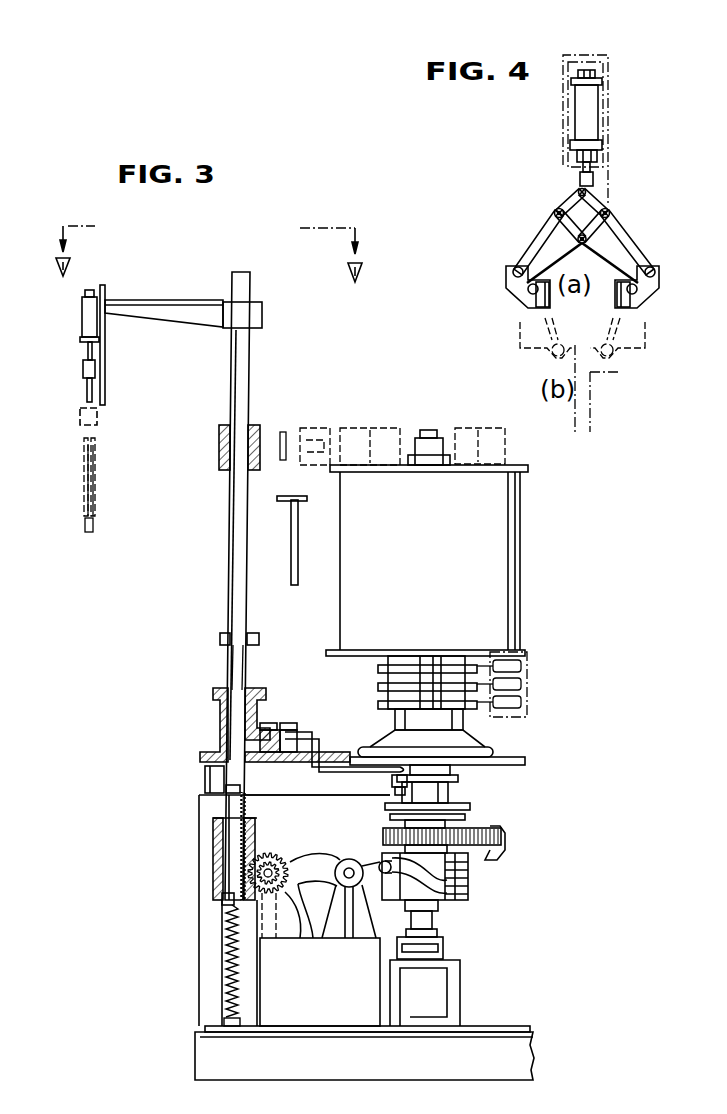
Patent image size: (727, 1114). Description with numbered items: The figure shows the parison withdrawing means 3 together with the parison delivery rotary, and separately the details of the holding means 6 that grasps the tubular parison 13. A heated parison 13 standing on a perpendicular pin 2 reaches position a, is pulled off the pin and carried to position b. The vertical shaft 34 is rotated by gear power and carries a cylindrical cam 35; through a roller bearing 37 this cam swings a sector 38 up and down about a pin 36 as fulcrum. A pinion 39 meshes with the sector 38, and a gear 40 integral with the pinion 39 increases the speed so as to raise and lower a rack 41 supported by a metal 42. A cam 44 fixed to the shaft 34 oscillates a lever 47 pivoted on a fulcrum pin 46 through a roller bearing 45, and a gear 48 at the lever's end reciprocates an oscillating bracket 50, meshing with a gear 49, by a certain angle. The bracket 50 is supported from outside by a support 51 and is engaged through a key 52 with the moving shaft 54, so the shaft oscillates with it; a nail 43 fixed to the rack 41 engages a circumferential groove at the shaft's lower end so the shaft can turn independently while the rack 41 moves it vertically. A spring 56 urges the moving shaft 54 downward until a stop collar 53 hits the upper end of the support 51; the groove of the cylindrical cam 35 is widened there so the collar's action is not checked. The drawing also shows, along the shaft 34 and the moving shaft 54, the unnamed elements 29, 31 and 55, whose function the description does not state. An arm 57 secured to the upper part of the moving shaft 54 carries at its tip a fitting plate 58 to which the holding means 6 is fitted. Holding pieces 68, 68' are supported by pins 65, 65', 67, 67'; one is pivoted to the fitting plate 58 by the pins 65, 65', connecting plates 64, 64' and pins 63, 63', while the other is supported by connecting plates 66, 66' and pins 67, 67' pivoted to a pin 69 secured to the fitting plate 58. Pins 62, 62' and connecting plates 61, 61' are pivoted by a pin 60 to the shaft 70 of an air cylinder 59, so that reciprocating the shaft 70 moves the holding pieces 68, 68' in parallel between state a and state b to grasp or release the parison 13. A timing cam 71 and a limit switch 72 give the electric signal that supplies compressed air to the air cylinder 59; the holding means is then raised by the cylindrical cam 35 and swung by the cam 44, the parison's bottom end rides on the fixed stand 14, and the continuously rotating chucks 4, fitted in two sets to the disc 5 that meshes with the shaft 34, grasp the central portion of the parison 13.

In FIG. 3, the perpendicular pin 2 is at (100, 478).
In FIG. 3, the parison withdrawing means 3 is at (181, 288).
In FIG. 3, the chucks 4 is at (362, 425).
In FIG. 3, the disc 5 is at (509, 465).
In FIG. 3, the holding means 6 is at (90, 292).
In FIG. 3, the tubular parison 13 is at (97, 505).
In FIG. 4, the tubular parison 13 is at (592, 402).
In FIG. 3, the fixed stand 14 is at (300, 510).
In FIG. 3, the worm wheel 29 is at (507, 840).
In FIG. 3, the disc 31 is at (472, 808).
In FIG. 3, the shaft 34 is at (443, 925).
In FIG. 3, the cylindrical cam 35 is at (470, 900).
In FIG. 3, the pin 36 is at (358, 905).
In FIG. 3, the roller bearing 37 is at (386, 896).
In FIG. 3, the sector 38 is at (318, 920).
In FIG. 3, the pinion 39 is at (256, 850).
In FIG. 3, the gear 40 is at (280, 860).
In FIG. 3, the rack 41 is at (228, 842).
In FIG. 3, the metal 42 is at (213, 824).
In FIG. 3, the nail 43 is at (205, 780).
In FIG. 3, the cam 44 is at (458, 778).
In FIG. 3, the roller bearing 45 is at (393, 786).
In FIG. 3, the fulcrum pin 46 is at (360, 760).
In FIG. 3, the lever 47 is at (330, 775).
In FIG. 3, the gear 48 is at (290, 722).
In FIG. 3, the gear 49 is at (268, 722).
In FIG. 3, the oscillating bracket 50 is at (317, 778).
In FIG. 3, the support 51 is at (213, 742).
In FIG. 3, the key 52 is at (228, 668).
In FIG. 3, the stop collar 53 is at (220, 636).
In FIG. 3, the moving shaft 54 is at (230, 574).
In FIG. 3, the collar 55 is at (219, 440).
In FIG. 3, the spring 56 is at (226, 945).
In FIG. 3, the arm 57 is at (196, 324).
In FIG. 3, the fitting plate 58 is at (100, 364).
In FIG. 4, the fitting plate 58 is at (563, 98).
In FIG. 4, the air cylinder 59 is at (598, 110).
In FIG. 4, the pin 60 is at (579, 188).
In FIG. 4, the connecting plate 61 is at (549, 189).
In FIG. 4, the connecting plate 61' is at (620, 190).
In FIG. 4, the pin 62 is at (528, 202).
In FIG. 4, the pin 62' is at (644, 204).
In FIG. 4, the pin 63 is at (530, 246).
In FIG. 4, the pin 63' is at (642, 246).
In FIG. 4, the connecting plate 64 is at (511, 242).
In FIG. 4, the connecting plate 64' is at (658, 242).
In FIG. 4, the pin 65 is at (488, 266).
In FIG. 4, the pin 65' is at (681, 269).
In FIG. 4, the connecting plate 66 is at (504, 287).
In FIG. 4, the connecting plate 66' is at (662, 288).
In FIG. 4, the pin 67 is at (503, 310).
In FIG. 4, the pin 67' is at (659, 310).
In FIG. 4, the holding piece 68 is at (519, 341).
In FIG. 4, the holding piece 68' is at (646, 341).
In FIG. 4, the pin 69 is at (582, 244).
In FIG. 4, the shaft 70 is at (597, 164).
In FIG. 3, the timing cam 71 is at (378, 667).
In FIG. 3, the limit switch 72 is at (525, 680).